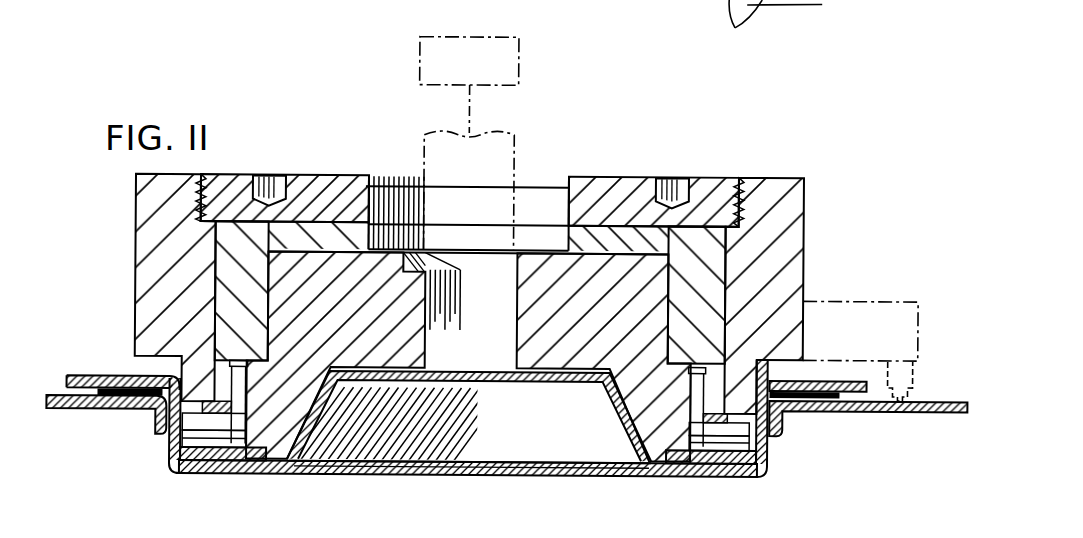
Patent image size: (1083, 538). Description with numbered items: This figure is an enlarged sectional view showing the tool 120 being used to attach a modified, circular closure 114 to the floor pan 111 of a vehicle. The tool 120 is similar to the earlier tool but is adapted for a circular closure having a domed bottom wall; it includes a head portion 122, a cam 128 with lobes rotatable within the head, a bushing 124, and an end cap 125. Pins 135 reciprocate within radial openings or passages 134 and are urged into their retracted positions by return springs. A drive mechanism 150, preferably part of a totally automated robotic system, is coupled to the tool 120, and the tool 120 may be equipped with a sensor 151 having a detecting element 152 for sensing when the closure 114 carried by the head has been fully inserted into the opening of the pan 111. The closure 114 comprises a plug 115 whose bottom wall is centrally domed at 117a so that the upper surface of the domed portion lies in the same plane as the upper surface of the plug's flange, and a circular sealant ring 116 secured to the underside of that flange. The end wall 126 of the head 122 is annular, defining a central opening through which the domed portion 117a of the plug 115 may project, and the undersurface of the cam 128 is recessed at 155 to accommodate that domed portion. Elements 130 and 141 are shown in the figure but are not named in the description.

The floor pan 111 is at (863, 412).
The closure 114 is at (168, 458).
The plug 115 is at (605, 478).
The sealant ring 116 is at (818, 409).
The domed portion 117a is at (492, 388).
The tool 120 is at (133, 258).
The head portion 122 is at (180, 370).
The bushing 124 is at (633, 223).
The end cap 125 is at (322, 178).
The end wall 126 is at (188, 470).
The cam 128 is at (398, 304).
The bore 130 is at (514, 295).
The radial openings or passages 134 is at (761, 23).
The pins 135 is at (758, 476).
The floor plate 141 is at (245, 470).
The drive mechanism 150 is at (506, 36).
The sensor 151 is at (858, 299).
The detecting element 152 is at (916, 371).
The recess 155 is at (412, 386).